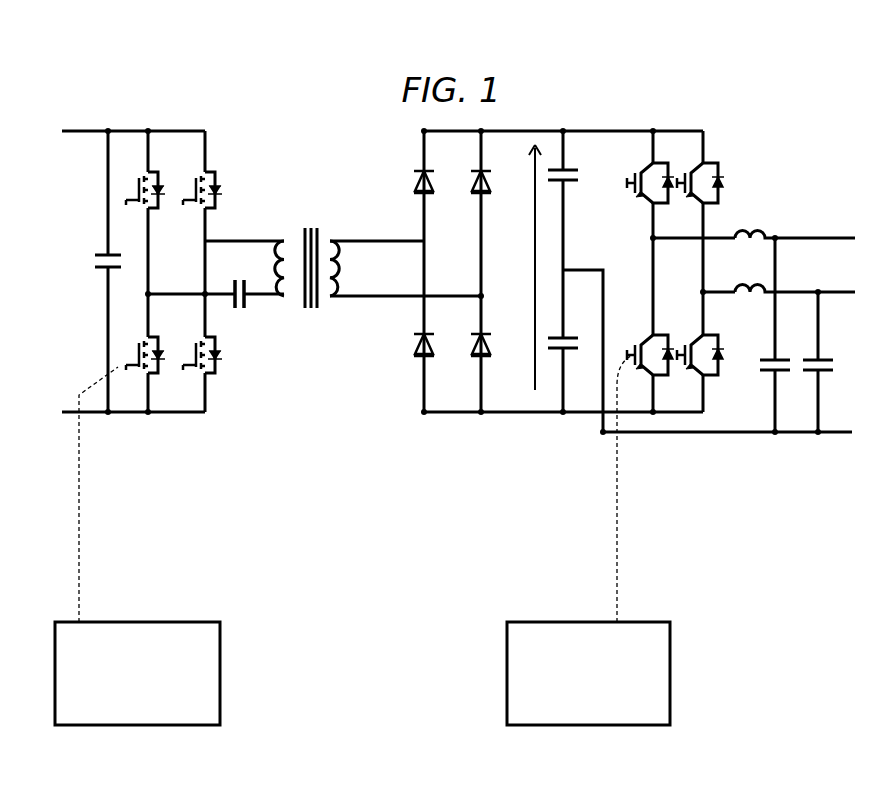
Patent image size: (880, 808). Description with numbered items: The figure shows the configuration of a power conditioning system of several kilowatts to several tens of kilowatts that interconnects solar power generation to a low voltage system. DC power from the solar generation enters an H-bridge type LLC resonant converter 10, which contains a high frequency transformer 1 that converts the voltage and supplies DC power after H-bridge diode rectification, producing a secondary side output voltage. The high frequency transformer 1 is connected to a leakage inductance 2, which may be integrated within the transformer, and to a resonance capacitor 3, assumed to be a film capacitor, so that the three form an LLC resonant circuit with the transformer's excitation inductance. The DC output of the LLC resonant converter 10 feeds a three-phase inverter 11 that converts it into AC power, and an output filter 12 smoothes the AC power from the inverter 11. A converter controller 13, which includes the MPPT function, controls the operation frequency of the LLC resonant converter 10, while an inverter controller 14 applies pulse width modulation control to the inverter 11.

The high frequency transformer 1 is at (318, 239).
The leakage inductance 2 is at (267, 239).
The resonance capacitor 3 is at (247, 310).
The LLC resonant converter 10 is at (65, 425).
The inverter 11 is at (548, 430).
The output filter 12 is at (727, 438).
The converter controller 13 is at (145, 622).
The inverter controller 14 is at (586, 622).